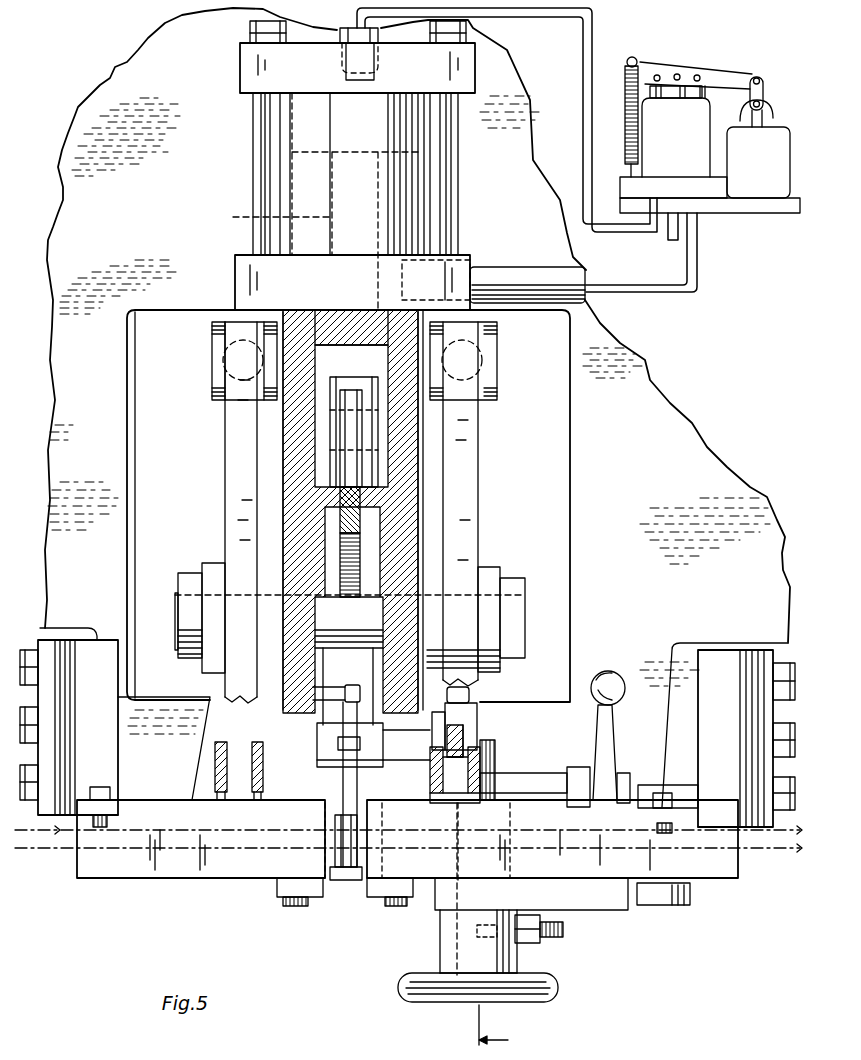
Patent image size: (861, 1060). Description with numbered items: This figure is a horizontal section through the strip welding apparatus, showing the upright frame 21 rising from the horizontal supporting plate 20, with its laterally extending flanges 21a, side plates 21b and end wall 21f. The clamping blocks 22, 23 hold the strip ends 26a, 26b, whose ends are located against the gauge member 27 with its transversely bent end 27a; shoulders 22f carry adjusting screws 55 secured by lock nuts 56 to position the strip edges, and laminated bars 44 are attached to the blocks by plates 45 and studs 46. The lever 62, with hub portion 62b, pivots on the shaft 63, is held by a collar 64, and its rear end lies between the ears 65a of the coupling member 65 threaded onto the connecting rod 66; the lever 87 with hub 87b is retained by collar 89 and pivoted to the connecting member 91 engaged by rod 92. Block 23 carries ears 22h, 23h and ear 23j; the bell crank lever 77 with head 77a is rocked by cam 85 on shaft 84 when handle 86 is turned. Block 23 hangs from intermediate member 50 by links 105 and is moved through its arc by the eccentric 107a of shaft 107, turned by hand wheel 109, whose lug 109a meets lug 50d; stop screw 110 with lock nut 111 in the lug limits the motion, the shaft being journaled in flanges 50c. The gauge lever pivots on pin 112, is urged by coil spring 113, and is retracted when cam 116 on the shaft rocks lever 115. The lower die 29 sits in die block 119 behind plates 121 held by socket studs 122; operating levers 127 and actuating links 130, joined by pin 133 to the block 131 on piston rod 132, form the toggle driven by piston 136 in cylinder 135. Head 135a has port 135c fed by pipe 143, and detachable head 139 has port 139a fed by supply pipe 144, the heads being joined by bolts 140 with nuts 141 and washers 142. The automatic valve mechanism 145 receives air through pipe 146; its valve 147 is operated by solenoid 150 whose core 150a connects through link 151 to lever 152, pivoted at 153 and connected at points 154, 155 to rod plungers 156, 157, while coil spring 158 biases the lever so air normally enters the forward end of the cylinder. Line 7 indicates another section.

The lever 7 is at (478, 713).
The horizontal supporting plate 20 is at (668, 411).
The upright frame 21 is at (283, 437).
The laterally extending flanges 21a is at (135, 458).
The side plates 21b is at (285, 462).
The end wall 21f is at (318, 310).
The clamping block 22 is at (153, 880).
The shoulder 22f is at (160, 808).
The ears 22h is at (255, 752).
The clamping block 23 is at (733, 865).
The ears 23h is at (482, 773).
The ear 23j is at (612, 732).
The strip end 26a is at (297, 847).
The strip end 26b is at (395, 850).
The gauge member 27 is at (317, 769).
The transversely bent upper end 27a is at (340, 782).
The lower welding die 29 is at (345, 880).
The laminated bars 44 is at (68, 650).
The plates 45 is at (47, 650).
The studs 46 is at (27, 652).
The intermediate member 50 is at (615, 908).
The flanges 50c is at (440, 905).
The lug 50d is at (527, 943).
The adjusting screws 55 is at (100, 828).
The lock nuts 56 is at (98, 795).
The lever 62 is at (233, 493).
The hub portion 62b is at (213, 570).
The shaft 63 is at (174, 603).
The collar 64 is at (188, 578).
The coupling member 65 is at (212, 400).
The ears 65a is at (215, 384).
The connecting rod 66 is at (232, 352).
The operating lever 77 is at (470, 753).
The head 77a is at (470, 703).
The shaft 84 is at (553, 778).
The cam 85 is at (483, 767).
The operating handle 86 is at (612, 676).
The lever 87 is at (478, 530).
The hub portion 87b is at (488, 568).
The collar 89 is at (513, 588).
The connecting member 91 is at (497, 389).
The rod 92 is at (482, 356).
The links 105 is at (650, 792).
The shaft 107 is at (456, 956).
The eccentric 107a is at (510, 863).
The hand wheel 109 is at (408, 1002).
The lug 109a is at (518, 942).
The stop screw 110 is at (560, 935).
The lock nut 111 is at (557, 925).
The pin 112 is at (404, 760).
The coil spring 113 is at (348, 686).
The lever 115 is at (432, 719).
The cam 116 is at (494, 752).
The lower die block 119 is at (333, 873).
The plates 121 is at (280, 888).
The socket studs 122 is at (283, 907).
The operating levers 127 is at (335, 657).
The actuating links 130 is at (362, 497).
The block 131 is at (372, 367).
The piston rod 132 is at (262, 211).
The pin 133 is at (382, 437).
The cylinder 135 is at (308, 190).
The cylinder head 135a is at (452, 270).
The port 135c is at (417, 283).
The piston 136 is at (292, 149).
The detachable head 139 is at (240, 67).
The port 139a is at (374, 80).
The longitudinal bolts 140 is at (261, 139).
The nuts 141 is at (250, 29).
The washers 142 is at (246, 42).
The pipe 143 is at (590, 300).
The supply pipe 144 is at (523, 17).
The automatic valve mechanism 145 is at (721, 222).
The pipe 146 is at (670, 236).
The valve 147 is at (676, 131).
The solenoid 150 is at (758, 162).
The core 150a is at (766, 117).
The link 151 is at (763, 79).
The lever 152 is at (723, 79).
The pivot 153 is at (678, 74).
The connection point 154 is at (659, 74).
The connection point 155 is at (699, 74).
The rod plunger 156 is at (637, 58).
The rod plunger 157 is at (706, 94).
The coil spring 158 is at (627, 100).